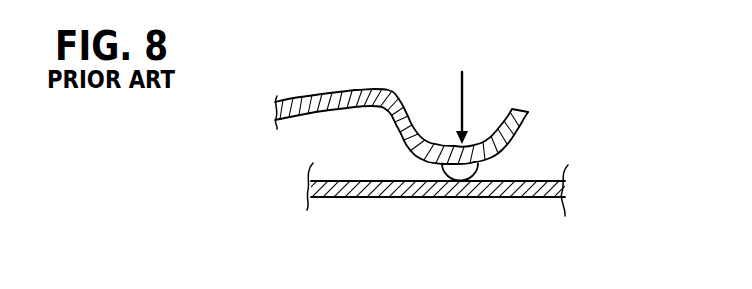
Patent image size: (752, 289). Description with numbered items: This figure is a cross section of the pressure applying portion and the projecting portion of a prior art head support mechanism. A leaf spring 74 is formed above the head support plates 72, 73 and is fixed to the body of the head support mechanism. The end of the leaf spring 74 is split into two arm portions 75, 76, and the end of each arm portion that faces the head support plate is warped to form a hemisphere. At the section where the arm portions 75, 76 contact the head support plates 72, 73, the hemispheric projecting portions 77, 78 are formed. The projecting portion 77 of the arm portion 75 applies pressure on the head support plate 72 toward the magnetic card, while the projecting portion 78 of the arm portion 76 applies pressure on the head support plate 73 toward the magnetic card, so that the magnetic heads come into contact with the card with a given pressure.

The head support plate 72 is at (429, 208).
The head support plate 73 is at (394, 198).
The leaf spring 74 is at (340, 92).
The arm portion 75 is at (471, 90).
The arm portion 76 is at (502, 123).
The projecting portion 77 is at (389, 153).
The projecting portion 78 is at (443, 171).